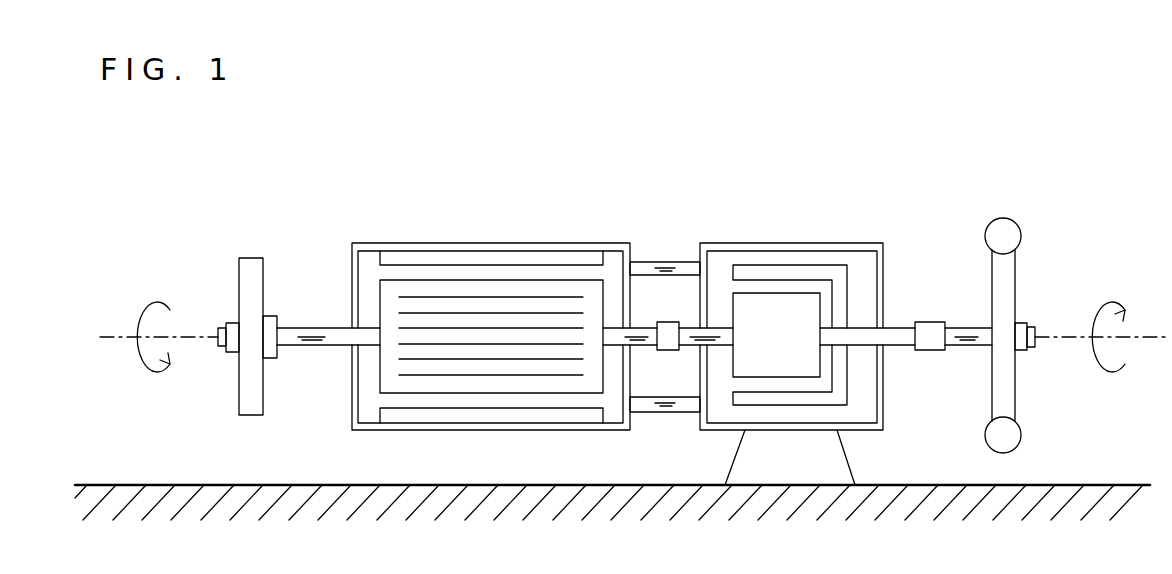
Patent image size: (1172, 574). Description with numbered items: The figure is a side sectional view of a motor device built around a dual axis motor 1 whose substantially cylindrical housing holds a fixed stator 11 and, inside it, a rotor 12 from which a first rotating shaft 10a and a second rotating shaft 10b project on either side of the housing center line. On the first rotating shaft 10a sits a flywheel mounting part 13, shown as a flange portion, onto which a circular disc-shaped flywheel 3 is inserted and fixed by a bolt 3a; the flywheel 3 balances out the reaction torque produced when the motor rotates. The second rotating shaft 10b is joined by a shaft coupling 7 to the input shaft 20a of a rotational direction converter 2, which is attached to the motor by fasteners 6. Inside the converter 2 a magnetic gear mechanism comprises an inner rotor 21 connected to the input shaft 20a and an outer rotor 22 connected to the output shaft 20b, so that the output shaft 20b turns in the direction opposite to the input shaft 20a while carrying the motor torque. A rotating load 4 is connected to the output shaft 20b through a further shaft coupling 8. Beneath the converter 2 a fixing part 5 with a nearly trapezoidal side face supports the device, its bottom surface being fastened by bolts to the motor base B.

The dual axis motor 1 is at (548, 236).
The rotational direction converter 2 is at (777, 240).
The flywheel 3 is at (252, 257).
The bolt 3a is at (233, 322).
The rotating load 4 is at (1004, 215).
The fixing part 5 is at (833, 457).
The fastener 6 is at (668, 262).
The shaft coupling 7 is at (667, 350).
The shaft coupling 8 is at (930, 322).
The first rotating shaft 10a is at (308, 328).
The second rotating shaft 10b is at (640, 328).
The stator 11 is at (413, 258).
The rotor 12 is at (480, 292).
The flywheel mounting part 13 is at (270, 315).
The input shaft 20a is at (718, 328).
The output shaft 20b is at (895, 328).
The inner rotor 21 is at (810, 293).
The outer rotor 22 is at (793, 272).
The motor base B is at (1070, 483).